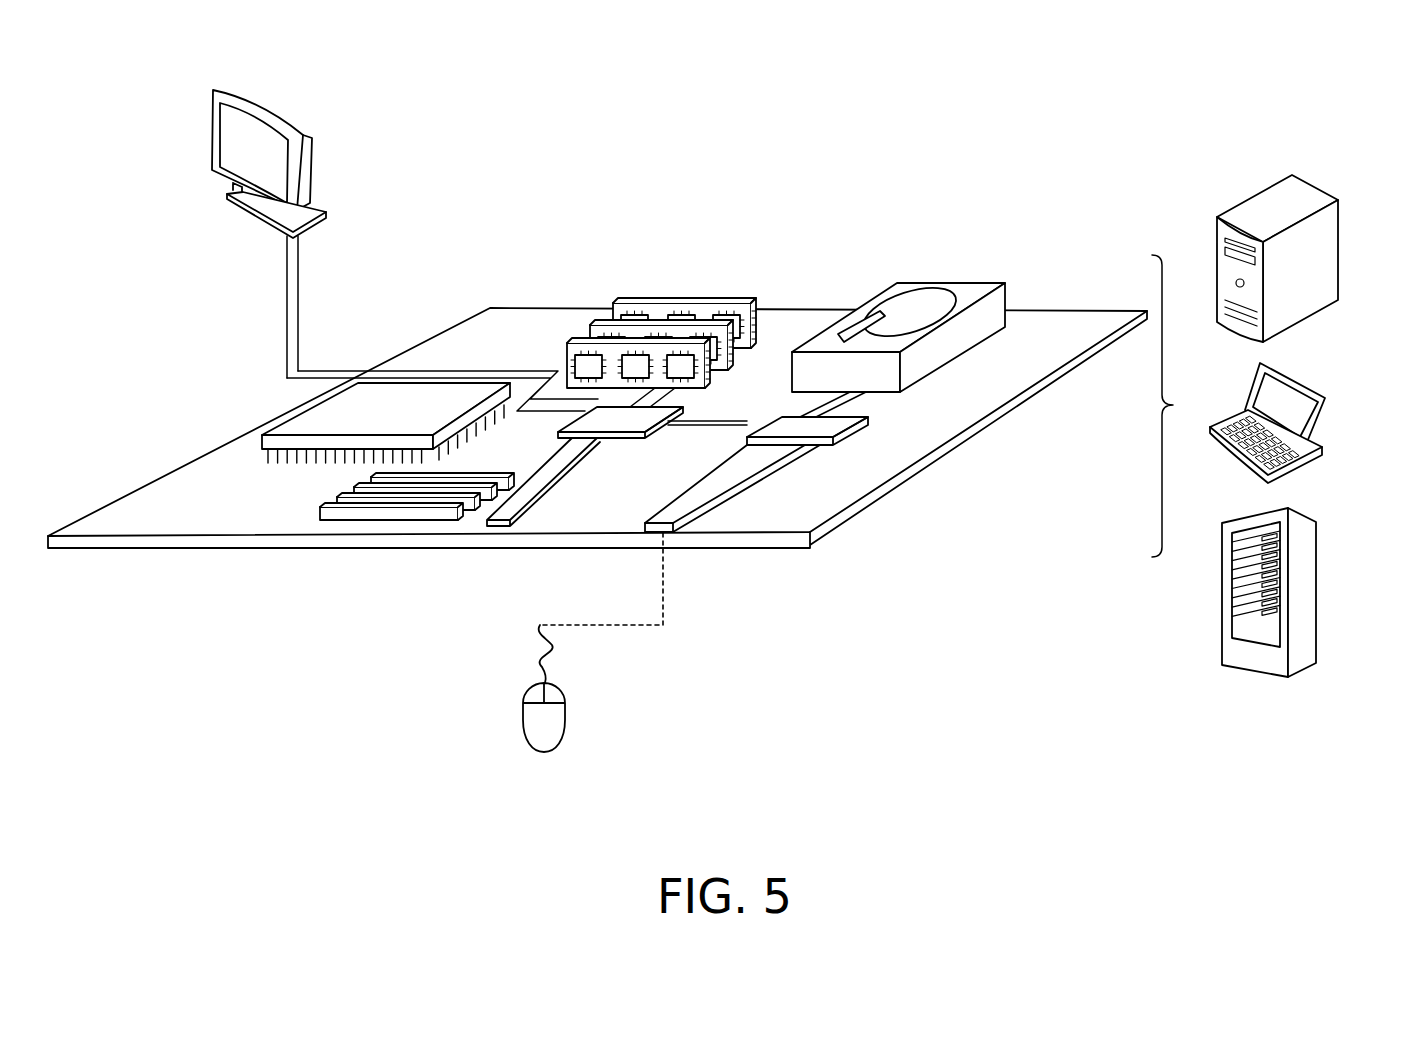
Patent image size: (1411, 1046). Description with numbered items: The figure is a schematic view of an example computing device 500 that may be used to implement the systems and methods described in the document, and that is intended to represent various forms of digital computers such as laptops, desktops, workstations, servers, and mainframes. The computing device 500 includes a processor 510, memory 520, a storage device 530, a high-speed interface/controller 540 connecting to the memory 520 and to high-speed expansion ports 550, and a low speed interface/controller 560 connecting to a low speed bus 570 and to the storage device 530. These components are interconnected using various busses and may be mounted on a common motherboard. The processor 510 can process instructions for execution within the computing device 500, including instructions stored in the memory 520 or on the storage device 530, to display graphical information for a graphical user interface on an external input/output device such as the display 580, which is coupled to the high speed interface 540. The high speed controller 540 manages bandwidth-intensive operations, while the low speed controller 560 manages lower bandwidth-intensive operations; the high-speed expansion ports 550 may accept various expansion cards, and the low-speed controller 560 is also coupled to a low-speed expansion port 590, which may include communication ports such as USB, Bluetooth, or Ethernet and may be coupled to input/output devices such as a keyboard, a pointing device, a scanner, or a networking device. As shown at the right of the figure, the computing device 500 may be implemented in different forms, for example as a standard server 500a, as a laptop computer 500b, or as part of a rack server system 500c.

The computing device 500 is at (765, 162).
The standard server 500a is at (1250, 195).
The laptop computer 500b is at (1303, 383).
The rack server system 500c is at (1310, 573).
The processor 510 is at (262, 437).
The memory 520 is at (682, 302).
The storage device 530 is at (947, 282).
The high-speed interface/controller 540 is at (627, 440).
The high-speed expansion ports 550 is at (320, 508).
The low speed interface/controller 560 is at (797, 425).
The low speed bus 570 is at (750, 487).
The display 580 is at (212, 137).
The low-speed expansion port 590 is at (673, 533).